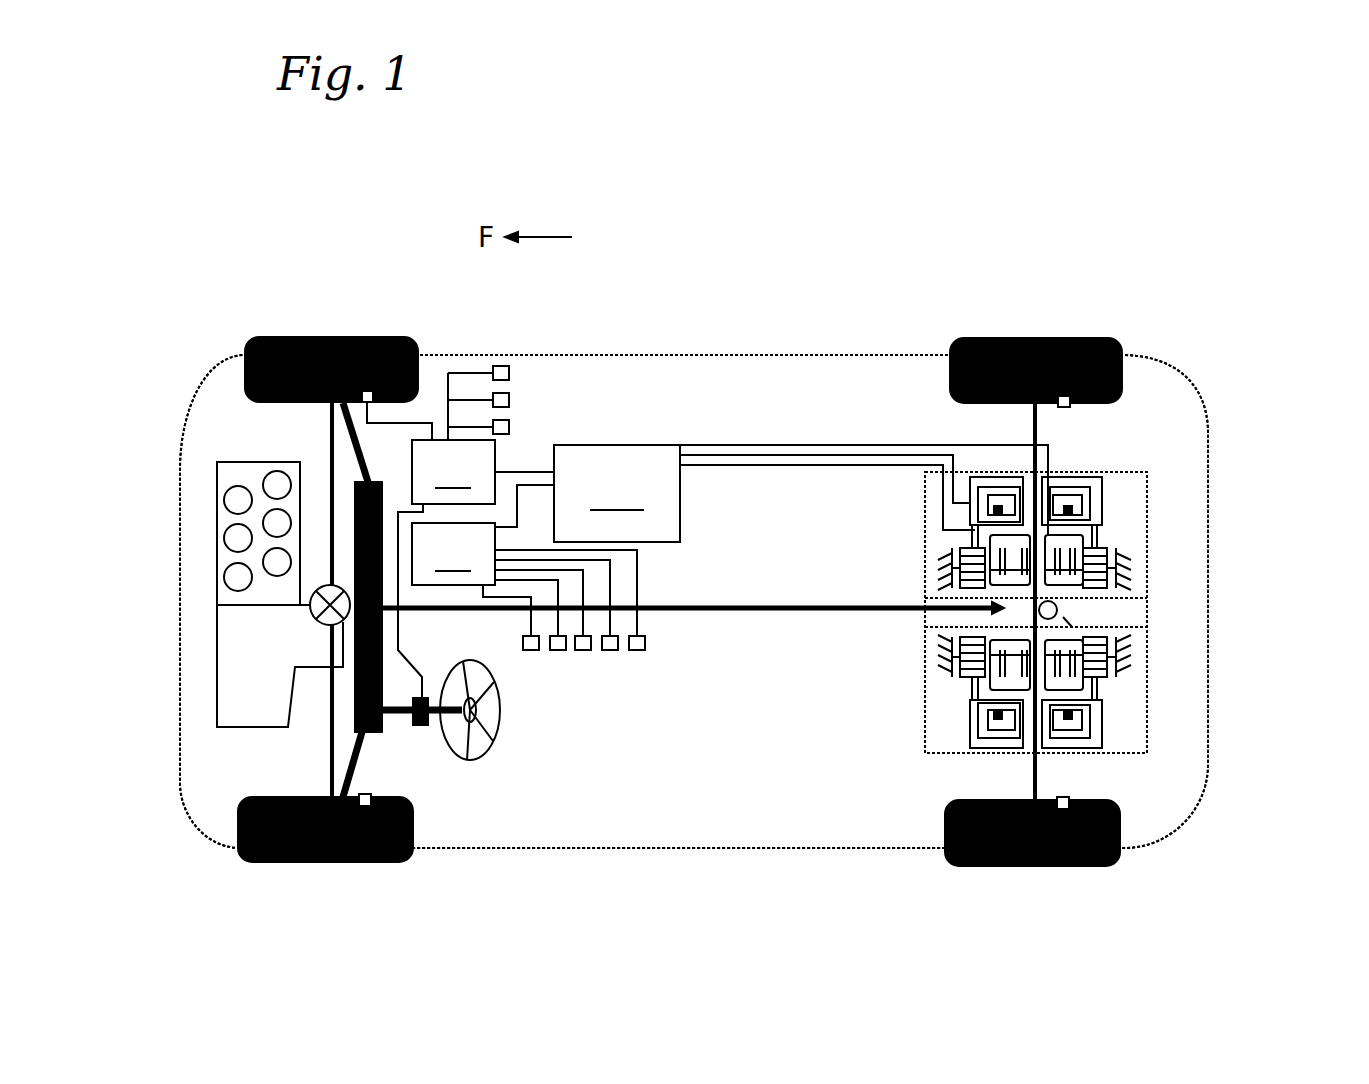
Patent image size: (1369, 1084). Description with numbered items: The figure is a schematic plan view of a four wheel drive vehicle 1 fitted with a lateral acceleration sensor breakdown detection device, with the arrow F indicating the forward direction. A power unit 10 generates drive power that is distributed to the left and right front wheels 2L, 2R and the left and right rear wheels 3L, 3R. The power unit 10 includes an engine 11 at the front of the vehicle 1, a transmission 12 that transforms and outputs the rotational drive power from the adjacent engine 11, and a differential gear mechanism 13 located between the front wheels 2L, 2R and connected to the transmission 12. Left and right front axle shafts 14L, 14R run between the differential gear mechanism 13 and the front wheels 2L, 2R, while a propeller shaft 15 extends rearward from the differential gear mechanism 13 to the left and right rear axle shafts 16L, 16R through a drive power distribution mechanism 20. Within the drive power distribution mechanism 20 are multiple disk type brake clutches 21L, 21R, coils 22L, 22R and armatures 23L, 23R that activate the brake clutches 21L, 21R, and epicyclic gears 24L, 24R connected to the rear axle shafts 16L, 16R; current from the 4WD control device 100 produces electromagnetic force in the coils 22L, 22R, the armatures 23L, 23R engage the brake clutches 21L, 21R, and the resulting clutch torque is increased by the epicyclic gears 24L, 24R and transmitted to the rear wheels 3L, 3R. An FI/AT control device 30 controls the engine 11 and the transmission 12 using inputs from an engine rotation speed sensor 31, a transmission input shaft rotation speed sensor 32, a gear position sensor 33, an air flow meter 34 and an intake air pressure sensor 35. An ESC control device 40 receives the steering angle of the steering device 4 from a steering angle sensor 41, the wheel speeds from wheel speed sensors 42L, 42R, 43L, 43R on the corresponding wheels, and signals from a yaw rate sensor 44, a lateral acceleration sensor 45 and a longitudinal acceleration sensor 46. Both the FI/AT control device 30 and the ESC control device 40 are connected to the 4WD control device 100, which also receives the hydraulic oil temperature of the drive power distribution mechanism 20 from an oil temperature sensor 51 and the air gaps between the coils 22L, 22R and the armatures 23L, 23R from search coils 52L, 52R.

The four wheel drive vehicle 1 is at (1228, 236).
The power unit 10 is at (172, 593).
The right front wheel 2R is at (337, 337).
The left front wheel 2L is at (330, 862).
The right rear wheel 3R is at (1040, 338).
The left rear wheel 3L is at (1028, 867).
The steering device 4 is at (383, 626).
The engine 11 is at (222, 517).
The transmission 12 is at (222, 687).
The differential gear mechanism 13 is at (317, 613).
The right front axle shaft 14R is at (332, 448).
The left front axle shaft 14L is at (332, 760).
The propeller shaft 15 is at (735, 613).
The right rear axle shaft 16R is at (1033, 427).
The left rear axle shaft 16L is at (1033, 780).
The drive power distribution mechanism 20 is at (905, 758).
The right brake clutch 21R is at (1148, 567).
The left brake clutch 21L is at (1148, 650).
The right coil 22R is at (1073, 500).
The left coil 22L is at (1073, 722).
The right armature 23R is at (1068, 478).
The left armature 23L is at (1075, 748).
The right epicyclic gear 24R is at (1077, 567).
The left epicyclic gear 24L is at (1080, 660).
The FI/AT control device 30 is at (483, 535).
The engine rotation speed sensor 31 is at (531, 651).
The transmission input shaft rotation speed sensor 32 is at (558, 651).
The gear position sensor 33 is at (583, 651).
The air flow meter 34 is at (610, 651).
The intake air pressure sensor 35 is at (637, 651).
The ESC control device 40 is at (483, 472).
The steering angle sensor 41 is at (421, 725).
The right front wheel speed sensor 42R is at (362, 400).
The left front wheel speed sensor 42L is at (365, 794).
The right rear wheel speed sensor 43R is at (1063, 407).
The left rear wheel speed sensor 43L is at (1063, 797).
The yaw rate sensor 44 is at (509, 373).
The lateral acceleration sensor 45 is at (509, 400).
The longitudinal acceleration sensor 46 is at (509, 427).
The oil temperature sensor 51 is at (1058, 615).
The right search coil 52R is at (994, 510).
The left search coil 52L is at (994, 714).
The 4WD control device 100 is at (801, 493).